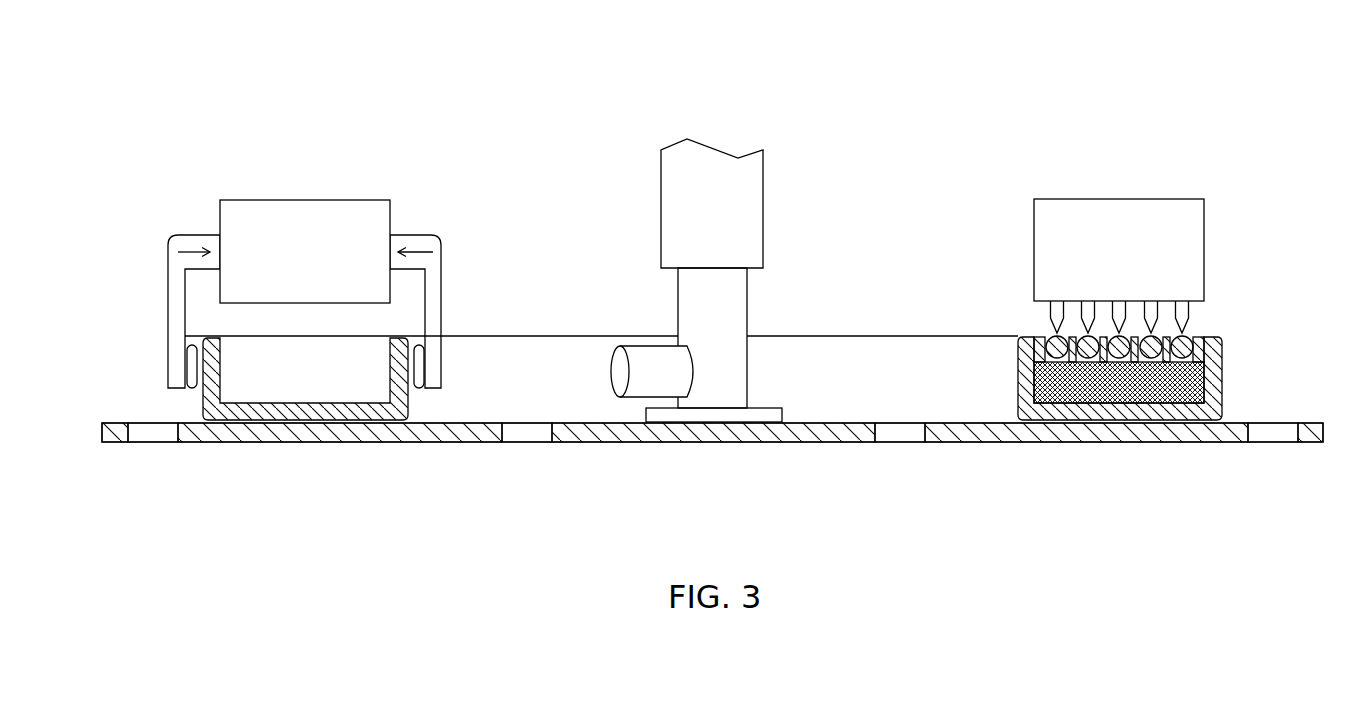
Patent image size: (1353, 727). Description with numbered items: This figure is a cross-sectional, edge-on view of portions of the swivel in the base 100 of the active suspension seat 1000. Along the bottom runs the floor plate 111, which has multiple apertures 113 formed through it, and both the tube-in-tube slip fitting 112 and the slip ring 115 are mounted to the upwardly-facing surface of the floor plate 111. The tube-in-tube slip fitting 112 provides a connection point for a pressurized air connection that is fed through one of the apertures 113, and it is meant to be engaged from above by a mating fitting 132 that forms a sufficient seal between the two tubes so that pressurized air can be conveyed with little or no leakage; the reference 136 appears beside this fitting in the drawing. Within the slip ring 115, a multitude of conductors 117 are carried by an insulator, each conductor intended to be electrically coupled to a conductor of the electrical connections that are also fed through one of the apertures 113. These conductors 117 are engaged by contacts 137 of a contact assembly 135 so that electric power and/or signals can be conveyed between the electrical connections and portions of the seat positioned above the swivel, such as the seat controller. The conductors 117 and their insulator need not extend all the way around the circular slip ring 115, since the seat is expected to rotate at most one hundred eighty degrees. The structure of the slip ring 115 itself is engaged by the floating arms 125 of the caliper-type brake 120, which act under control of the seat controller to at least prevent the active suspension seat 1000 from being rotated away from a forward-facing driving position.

The active suspension seat 1000 is at (1203, 58).
The base 100 is at (1220, 95).
The floor plate 111 is at (747, 442).
The tube-in-tube slip fitting 112 is at (732, 315).
The apertures 113 is at (154, 448).
The slip ring 115 is at (203, 402).
The conductors 117 is at (1052, 337).
The brake 120 is at (405, 182).
The floating arms 125 is at (168, 295).
The mating fitting 132 is at (732, 213).
The contact assembly 135 is at (1017, 182).
The direction of movement 136 is at (752, 277).
The contacts 137 is at (1049, 308).